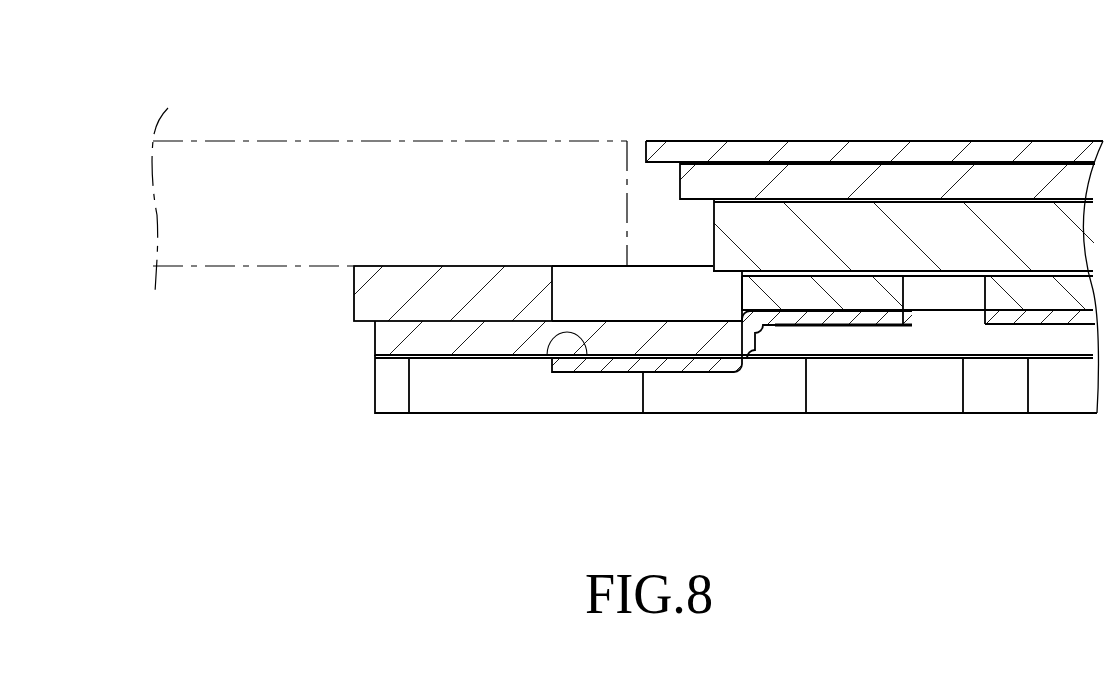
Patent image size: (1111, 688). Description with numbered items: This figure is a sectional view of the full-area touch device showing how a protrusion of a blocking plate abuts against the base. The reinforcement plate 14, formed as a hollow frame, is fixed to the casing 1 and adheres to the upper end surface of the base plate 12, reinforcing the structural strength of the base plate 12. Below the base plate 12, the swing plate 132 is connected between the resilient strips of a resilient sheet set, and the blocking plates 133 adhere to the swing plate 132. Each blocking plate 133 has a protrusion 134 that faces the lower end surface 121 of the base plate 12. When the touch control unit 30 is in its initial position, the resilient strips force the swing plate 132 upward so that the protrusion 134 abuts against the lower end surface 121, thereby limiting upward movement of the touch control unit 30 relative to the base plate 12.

The casing 1 is at (340, 133).
The touch control unit 30 is at (755, 133).
The reinforcement plate 14 is at (373, 303).
The base plate 12 is at (500, 343).
The lower end surface 121 is at (556, 340).
The protrusion 134 is at (635, 367).
The swing plate 132 is at (798, 298).
The blocking plate 133 is at (877, 318).